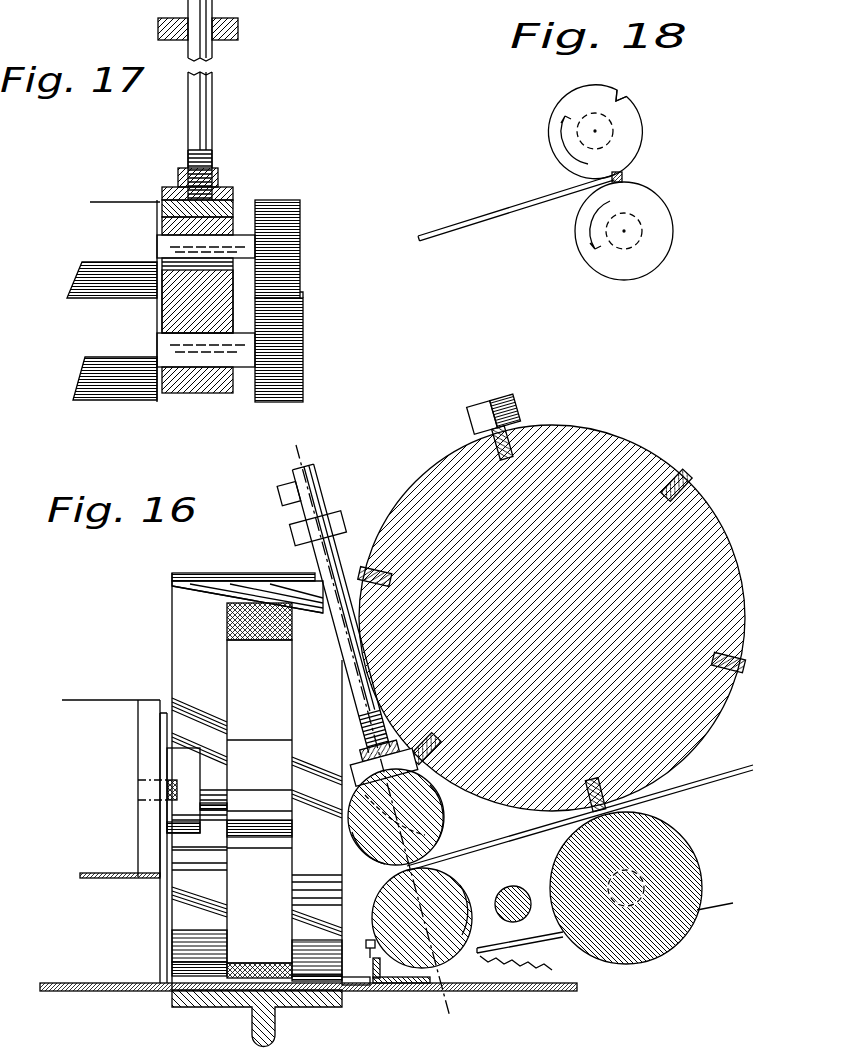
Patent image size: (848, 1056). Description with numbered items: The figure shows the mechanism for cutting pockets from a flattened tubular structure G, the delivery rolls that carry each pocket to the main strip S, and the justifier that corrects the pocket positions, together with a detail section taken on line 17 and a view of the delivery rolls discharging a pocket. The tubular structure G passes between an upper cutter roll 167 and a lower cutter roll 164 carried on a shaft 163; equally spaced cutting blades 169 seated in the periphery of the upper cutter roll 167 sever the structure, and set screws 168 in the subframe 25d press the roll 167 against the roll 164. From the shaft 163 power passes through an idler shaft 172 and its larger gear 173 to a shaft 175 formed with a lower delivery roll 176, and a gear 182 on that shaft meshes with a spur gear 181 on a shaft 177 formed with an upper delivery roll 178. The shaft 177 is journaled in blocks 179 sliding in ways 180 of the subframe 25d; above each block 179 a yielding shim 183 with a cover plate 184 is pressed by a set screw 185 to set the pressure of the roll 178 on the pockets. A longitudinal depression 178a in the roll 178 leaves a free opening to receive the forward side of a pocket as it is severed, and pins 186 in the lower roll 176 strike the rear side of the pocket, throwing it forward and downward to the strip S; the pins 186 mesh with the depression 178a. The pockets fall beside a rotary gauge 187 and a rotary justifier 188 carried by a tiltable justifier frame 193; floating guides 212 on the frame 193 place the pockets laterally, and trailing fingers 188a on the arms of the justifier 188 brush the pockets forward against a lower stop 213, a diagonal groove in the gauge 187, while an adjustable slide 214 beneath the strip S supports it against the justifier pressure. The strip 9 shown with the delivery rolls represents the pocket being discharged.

In FIG. 17, the set screw 185 is at (197, 95).
In FIG. 16, the set screw 185 is at (413, 483).
In FIG. 17, the subframe 25d is at (236, 197).
In FIG. 16, the subframe 25d is at (478, 952).
In FIG. 17, the ways 180 is at (150, 205).
In FIG. 16, the ways 180 is at (347, 761).
In FIG. 17, the upper delivery roll 178 is at (110, 202).
In FIG. 18, the upper delivery roll 178 is at (566, 105).
In FIG. 16, the upper delivery roll 178 is at (448, 806).
In FIG. 17, the shaft 177 is at (235, 246).
In FIG. 16, the shaft 177 is at (412, 829).
In FIG. 17, the spur gear 181 is at (280, 225).
In FIG. 17, the cover plate 184 is at (165, 213).
In FIG. 17, the yielding shim 183 is at (165, 226).
In FIG. 17, the block 179 is at (300, 275).
In FIG. 16, the block 179 is at (373, 860).
In FIG. 17, the gear 182 is at (290, 328).
In FIG. 17, the lower delivery roll 176 is at (120, 385).
In FIG. 18, the lower delivery roll 176 is at (660, 230).
In FIG. 16, the lower delivery roll 176 is at (417, 970).
In FIG. 17, the shaft 175 is at (220, 350).
In FIG. 16, the shaft 175 is at (464, 890).
In FIG. 18, the longitudinal depression 178a is at (627, 93).
In FIG. 16, the longitudinal depression 178a is at (349, 823).
In FIG. 18, the pins 186 is at (623, 176).
In FIG. 16, the pins 186 is at (367, 946).
In FIG. 18, the strip 9 is at (510, 212).
In FIG. 16, the strip 9 is at (325, 981).
In FIG. 16, the section line 17- 17 is at (370, 739).
In FIG. 16, the set screws 168 is at (518, 394).
In FIG. 16, the upper cutter roll 167 is at (589, 458).
In FIG. 16, the cutting blades 169 is at (680, 490).
In FIG. 16, the lower stop 213 is at (250, 590).
In FIG. 16, the rotary gauge 187 is at (185, 608).
In FIG. 16, the trailing finger 188a is at (220, 1018).
In FIG. 16, the rotary justifier 188 is at (270, 694).
In FIG. 16, the justifier frame 193 is at (147, 827).
In FIG. 16, the idler shaft 172 is at (505, 918).
In FIG. 16, the larger gear 173 is at (538, 951).
In FIG. 16, the shaft 163 is at (643, 873).
In FIG. 16, the lower cutter roll 164 is at (687, 875).
In FIG. 16, the tubular structure G is at (722, 770).
In FIG. 16, the floating guides 212 is at (162, 915).
In FIG. 16, the main strip S is at (112, 991).
In FIG. 16, the adjustable slide 214 is at (187, 998).